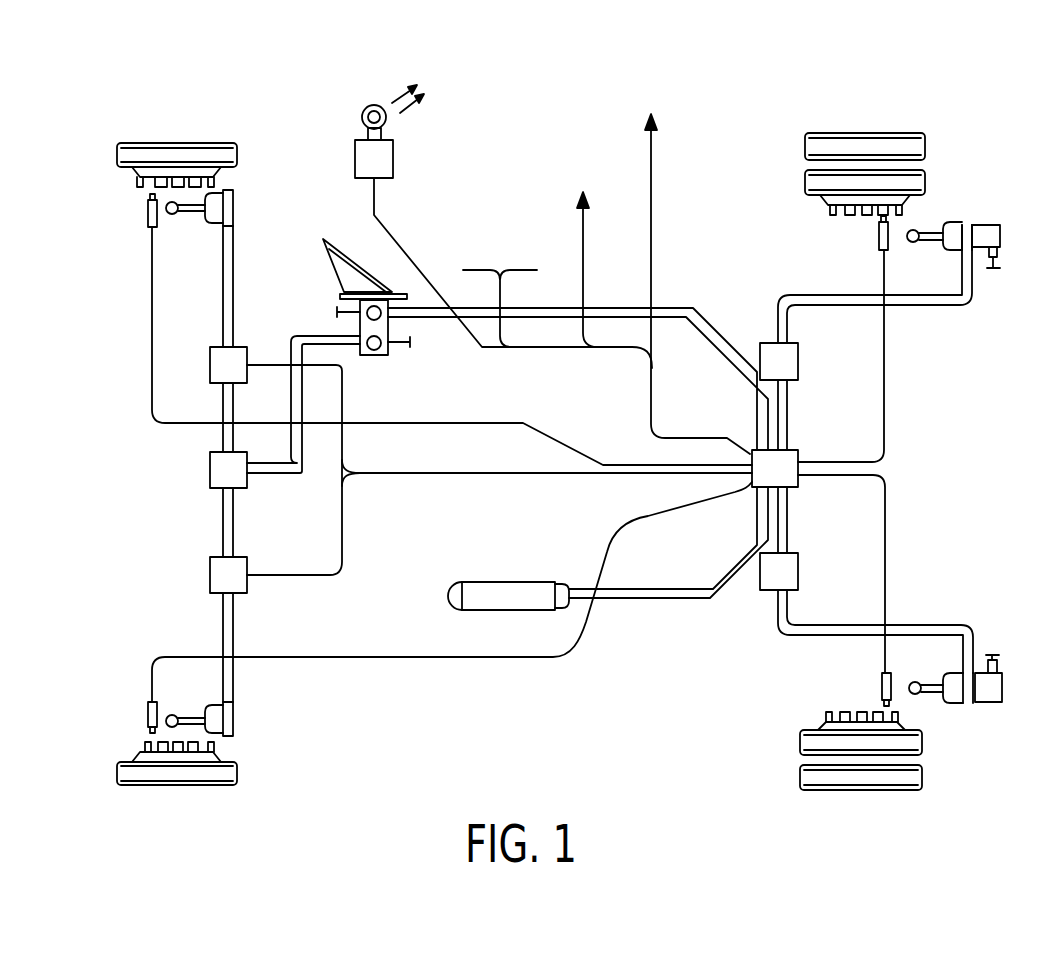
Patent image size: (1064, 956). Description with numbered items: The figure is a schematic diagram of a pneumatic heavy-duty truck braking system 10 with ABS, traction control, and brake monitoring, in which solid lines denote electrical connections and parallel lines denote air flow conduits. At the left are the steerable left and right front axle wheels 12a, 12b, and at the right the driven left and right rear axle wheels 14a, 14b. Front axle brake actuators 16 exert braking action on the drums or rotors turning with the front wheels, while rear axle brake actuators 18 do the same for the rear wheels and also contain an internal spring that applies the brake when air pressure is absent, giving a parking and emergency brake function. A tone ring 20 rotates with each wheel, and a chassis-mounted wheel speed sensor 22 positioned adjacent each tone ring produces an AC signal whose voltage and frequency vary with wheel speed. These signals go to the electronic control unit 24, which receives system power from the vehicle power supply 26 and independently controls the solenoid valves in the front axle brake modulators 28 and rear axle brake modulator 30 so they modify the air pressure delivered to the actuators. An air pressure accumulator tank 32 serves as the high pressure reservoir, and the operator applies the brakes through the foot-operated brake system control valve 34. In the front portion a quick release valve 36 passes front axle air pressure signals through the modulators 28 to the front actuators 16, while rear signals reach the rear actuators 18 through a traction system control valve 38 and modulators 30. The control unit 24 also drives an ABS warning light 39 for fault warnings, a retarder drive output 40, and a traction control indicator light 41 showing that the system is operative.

The pneumatic vehicle braking system 10 is at (240, 98).
The left front axle wheel 12a is at (175, 787).
The right front axle wheel 12b is at (173, 143).
The left rear axle wheel 14a is at (848, 792).
The right rear axle wheel 14b is at (868, 133).
The front axle brake actuator 16 is at (237, 205).
The rear axle brake actuator 18 is at (1002, 230).
The tone ring 20 is at (138, 185).
The wheel speed sensor 22 is at (145, 217).
The electronic control unit 24 is at (742, 474).
The vehicle power supply 26 is at (504, 267).
The front axle brake modulator 28 is at (247, 345).
The rear axle brake modulator 30 is at (798, 357).
The air pressure accumulator tank 32 is at (497, 580).
The brake system control valve 34 is at (358, 267).
The quick release valve 36 is at (210, 470).
The traction system control valve 38 is at (798, 452).
The ABS warning light 39 is at (492, 194).
The retarder drive output 40 is at (572, 237).
The traction control indicator light 41 is at (679, 251).